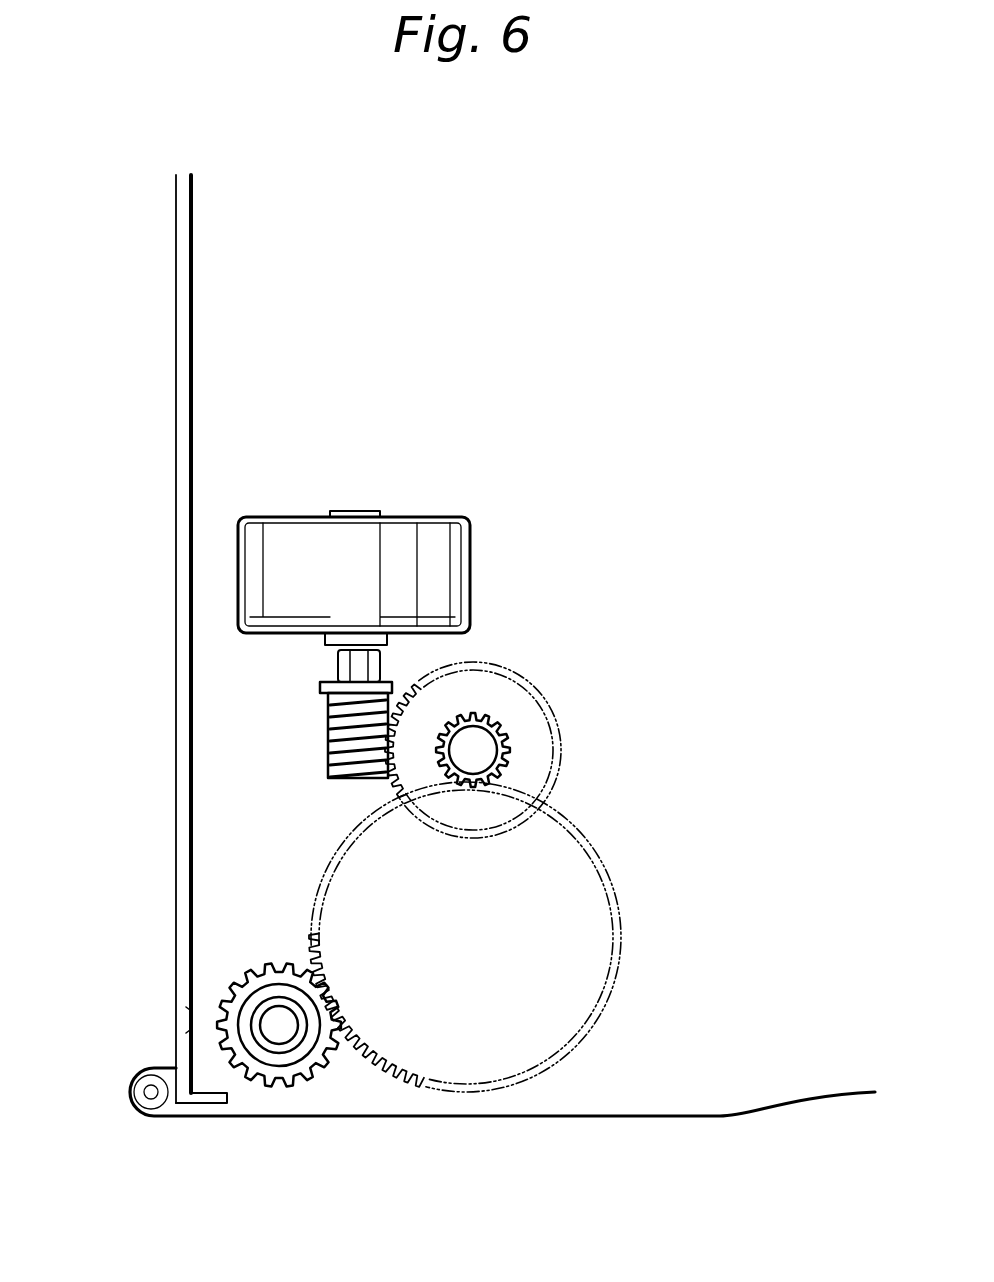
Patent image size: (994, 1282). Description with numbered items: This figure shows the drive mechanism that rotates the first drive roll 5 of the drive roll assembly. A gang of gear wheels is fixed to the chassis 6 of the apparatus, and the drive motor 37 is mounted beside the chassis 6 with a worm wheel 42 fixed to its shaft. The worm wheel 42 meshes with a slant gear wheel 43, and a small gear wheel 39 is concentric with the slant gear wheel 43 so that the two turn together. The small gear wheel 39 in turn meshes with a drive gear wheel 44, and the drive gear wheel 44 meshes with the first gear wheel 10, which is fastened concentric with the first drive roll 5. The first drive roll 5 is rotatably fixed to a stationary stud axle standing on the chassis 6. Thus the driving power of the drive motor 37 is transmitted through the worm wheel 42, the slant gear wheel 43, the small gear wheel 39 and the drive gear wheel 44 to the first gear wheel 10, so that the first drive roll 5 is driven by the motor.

The chassis 6 is at (176, 450).
The drive motor 37 is at (405, 535).
The worm wheel 42 is at (330, 728).
The small gear wheel 39 is at (505, 740).
The slant gear wheel 43 is at (525, 678).
The drive gear wheel 44 is at (608, 880).
The first gear wheel 10 is at (260, 968).
The first drive roll 5 is at (296, 1062).